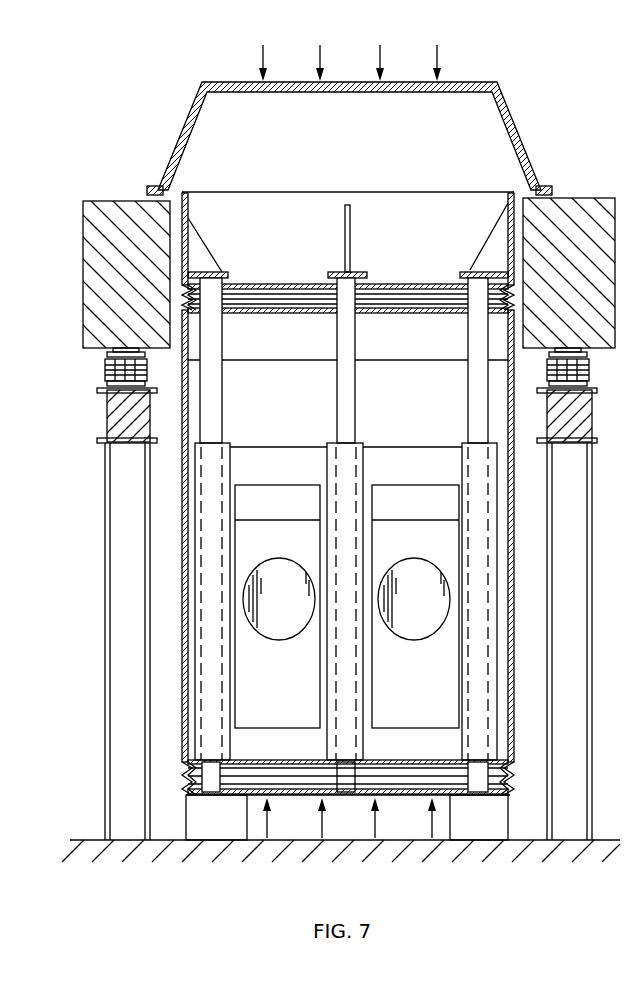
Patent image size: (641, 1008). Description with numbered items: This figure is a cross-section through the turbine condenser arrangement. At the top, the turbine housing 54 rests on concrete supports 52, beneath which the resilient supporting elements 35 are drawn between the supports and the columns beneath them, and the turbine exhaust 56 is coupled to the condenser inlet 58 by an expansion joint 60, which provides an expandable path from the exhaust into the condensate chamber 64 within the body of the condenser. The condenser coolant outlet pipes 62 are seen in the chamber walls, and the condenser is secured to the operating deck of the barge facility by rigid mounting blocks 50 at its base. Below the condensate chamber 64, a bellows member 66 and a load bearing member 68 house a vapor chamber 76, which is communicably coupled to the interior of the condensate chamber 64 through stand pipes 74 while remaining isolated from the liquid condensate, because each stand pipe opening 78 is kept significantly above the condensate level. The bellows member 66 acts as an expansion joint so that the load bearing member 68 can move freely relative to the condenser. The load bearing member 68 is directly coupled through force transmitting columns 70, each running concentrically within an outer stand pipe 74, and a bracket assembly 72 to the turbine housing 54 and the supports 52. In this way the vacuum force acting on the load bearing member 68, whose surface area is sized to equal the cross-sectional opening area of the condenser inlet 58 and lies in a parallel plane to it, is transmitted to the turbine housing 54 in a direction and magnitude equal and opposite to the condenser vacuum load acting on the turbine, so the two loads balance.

The turbine housing 54 is at (517, 127).
The concrete supports 52 is at (83, 280).
The load cells 35 is at (105, 373).
The bracket assembly 72 is at (214, 244).
The turbine exhaust 56 is at (394, 241).
The expansion joint 60 is at (432, 296).
The condenser inlet 58 is at (398, 349).
The force transmitting member (column) 70 is at (218, 383).
The stand pipe opening 78 is at (228, 443).
The stand pipes 74 is at (232, 469).
The outlet pipes 62 is at (271, 612).
The condensate chamber 64 is at (403, 677).
The bellows member 66 is at (512, 775).
The rigid mounting blocks 50 is at (201, 831).
The load bearing member 68 is at (348, 797).
The vapor chamber 76 is at (408, 779).